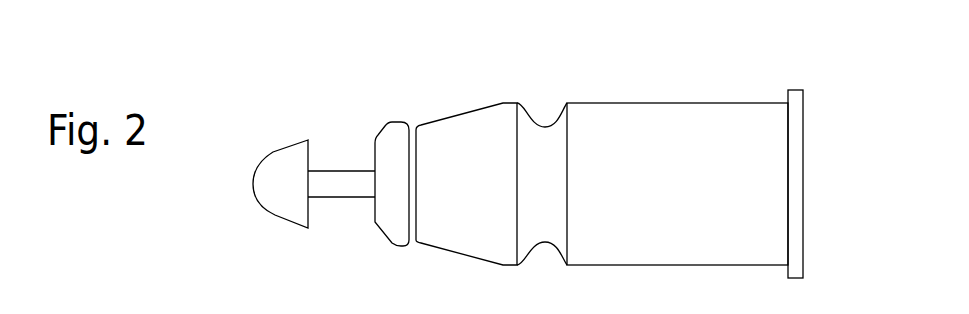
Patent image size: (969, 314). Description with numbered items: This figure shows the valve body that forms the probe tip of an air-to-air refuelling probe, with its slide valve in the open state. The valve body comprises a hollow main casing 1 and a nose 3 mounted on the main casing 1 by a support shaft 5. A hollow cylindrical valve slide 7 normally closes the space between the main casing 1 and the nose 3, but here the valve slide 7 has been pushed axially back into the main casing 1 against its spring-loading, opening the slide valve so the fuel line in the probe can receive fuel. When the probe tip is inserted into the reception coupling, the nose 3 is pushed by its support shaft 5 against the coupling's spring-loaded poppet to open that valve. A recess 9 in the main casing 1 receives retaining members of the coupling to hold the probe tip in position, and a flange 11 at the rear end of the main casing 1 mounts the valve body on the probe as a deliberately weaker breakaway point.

The main casing 1 is at (683, 104).
The nose 3 is at (254, 184).
The support shaft 5 is at (350, 170).
The valve slide 7 is at (392, 122).
The recess 9 is at (535, 157).
The flange 11 is at (795, 90).